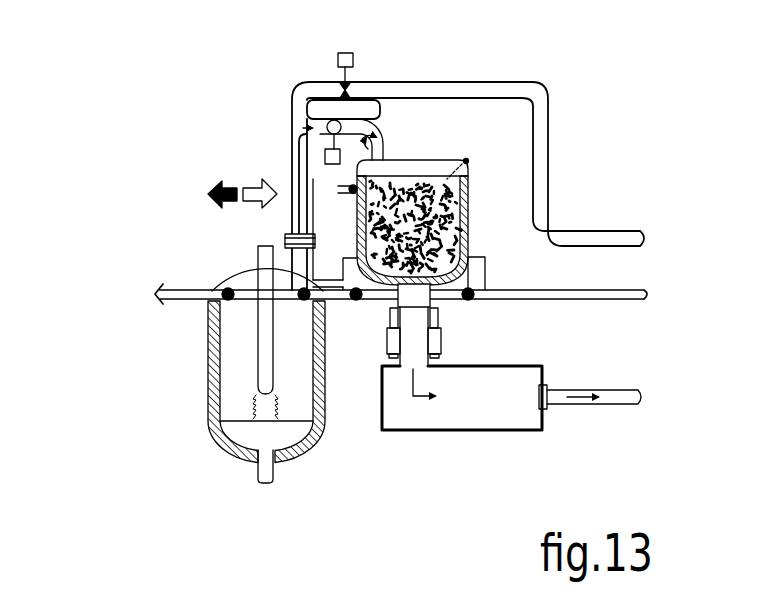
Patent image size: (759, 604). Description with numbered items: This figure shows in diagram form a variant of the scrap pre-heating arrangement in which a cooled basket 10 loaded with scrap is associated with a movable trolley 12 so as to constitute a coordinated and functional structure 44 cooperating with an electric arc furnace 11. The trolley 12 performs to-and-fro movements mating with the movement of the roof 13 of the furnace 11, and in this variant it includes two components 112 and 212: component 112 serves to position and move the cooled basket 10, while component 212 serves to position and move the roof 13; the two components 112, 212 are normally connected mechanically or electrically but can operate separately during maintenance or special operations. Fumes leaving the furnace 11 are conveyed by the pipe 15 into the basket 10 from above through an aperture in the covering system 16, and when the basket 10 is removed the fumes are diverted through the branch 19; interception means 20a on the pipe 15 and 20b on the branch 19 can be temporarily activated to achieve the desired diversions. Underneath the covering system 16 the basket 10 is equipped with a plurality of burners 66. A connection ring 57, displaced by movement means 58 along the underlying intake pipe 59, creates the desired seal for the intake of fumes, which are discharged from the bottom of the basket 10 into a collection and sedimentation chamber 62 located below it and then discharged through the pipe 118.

The cooled basket 10 is at (467, 188).
The electric arc furnace 11 is at (230, 452).
The movable trolley 12 is at (368, 322).
The roof 13 is at (245, 280).
The pipe 15 is at (357, 126).
The covering system 16 is at (418, 167).
The branch 19 is at (512, 90).
The interception means 20a is at (323, 157).
The interception means 20b is at (338, 56).
The coordinated and functional structure 44 is at (482, 233).
The connection ring 57 is at (432, 304).
The movement means 58 is at (442, 341).
The intake pipe 59 is at (380, 363).
The collection and sedimentation chamber 62 is at (488, 419).
The burners 66 is at (352, 188).
The component of the movable trolley 112 is at (477, 277).
The pipe 118 is at (625, 393).
The component of the movable trolley 212 is at (208, 301).